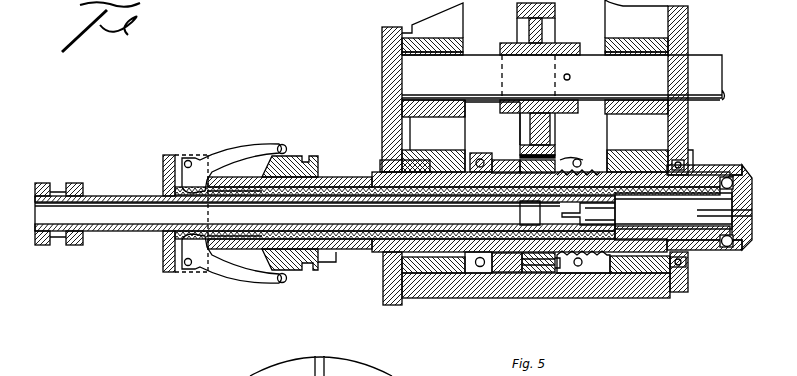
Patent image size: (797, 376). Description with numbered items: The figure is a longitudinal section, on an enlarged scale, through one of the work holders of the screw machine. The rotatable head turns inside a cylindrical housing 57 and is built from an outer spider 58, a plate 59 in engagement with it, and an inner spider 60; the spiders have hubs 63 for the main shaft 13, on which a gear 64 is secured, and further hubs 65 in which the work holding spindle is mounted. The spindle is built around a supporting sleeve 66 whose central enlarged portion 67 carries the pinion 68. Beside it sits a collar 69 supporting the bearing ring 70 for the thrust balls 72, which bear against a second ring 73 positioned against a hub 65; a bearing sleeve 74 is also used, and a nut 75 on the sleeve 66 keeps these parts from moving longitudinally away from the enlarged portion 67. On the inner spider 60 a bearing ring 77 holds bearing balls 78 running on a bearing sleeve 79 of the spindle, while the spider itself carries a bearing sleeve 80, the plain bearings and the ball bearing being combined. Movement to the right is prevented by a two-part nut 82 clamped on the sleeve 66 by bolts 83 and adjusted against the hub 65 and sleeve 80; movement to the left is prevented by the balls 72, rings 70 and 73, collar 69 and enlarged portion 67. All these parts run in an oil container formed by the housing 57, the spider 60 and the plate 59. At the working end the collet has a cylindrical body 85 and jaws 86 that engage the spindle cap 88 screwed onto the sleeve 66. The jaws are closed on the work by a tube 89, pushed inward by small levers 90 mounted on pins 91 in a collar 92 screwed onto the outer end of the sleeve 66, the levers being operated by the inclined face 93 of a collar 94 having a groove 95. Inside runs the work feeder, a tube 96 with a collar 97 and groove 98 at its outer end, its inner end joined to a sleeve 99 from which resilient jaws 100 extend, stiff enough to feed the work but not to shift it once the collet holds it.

The main shaft 13 is at (563, 77).
The cylindrical housing 57 is at (470, 273).
The outer spider 58 is at (456, 131).
The plate 59 is at (382, 86).
The inner spider 60 is at (688, 23).
The hubs 63 is at (450, 40).
The gear 64 is at (548, 30).
The hubs 65 is at (425, 155).
The supporting sleeve 66 is at (339, 178).
The central enlarged portion 67 is at (522, 268).
The pinion 68 is at (548, 258).
The collar 69 is at (528, 275).
The bearing ring 70 is at (503, 161).
The thrust balls 72 is at (481, 158).
The second ring 73 is at (492, 270).
The bearing sleeve 74 is at (420, 250).
The nut 75 is at (680, 292).
The bearing ring 77 is at (696, 160).
The bearing balls 78 is at (700, 255).
The bearing sleeve 79 is at (694, 172).
The bearing sleeve 80 is at (635, 265).
The two-part nut 82 is at (572, 167).
The bolts 83 is at (582, 165).
The cylindrical body 85 is at (676, 229).
The jaws 86 is at (735, 214).
The spindle cap 88 is at (728, 168).
The tube 89 is at (348, 252).
The small levers 90 is at (220, 148).
The pins 91 is at (188, 160).
The collar 92 is at (163, 262).
The inclined face 93 is at (268, 170).
The collar 94 is at (285, 272).
The groove 95 is at (312, 268).
The tube 96 is at (124, 196).
The collar 97 is at (92, 180).
The groove 98 is at (56, 183).
The sleeve 99 is at (536, 205).
The resilient jaws 100 is at (618, 212).